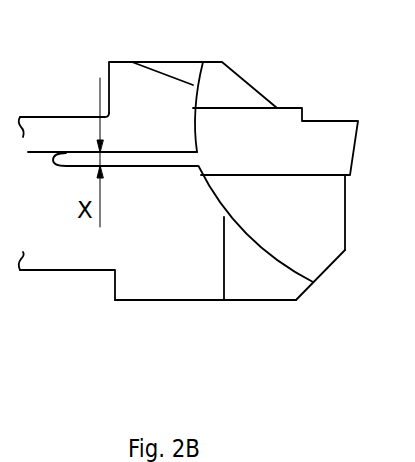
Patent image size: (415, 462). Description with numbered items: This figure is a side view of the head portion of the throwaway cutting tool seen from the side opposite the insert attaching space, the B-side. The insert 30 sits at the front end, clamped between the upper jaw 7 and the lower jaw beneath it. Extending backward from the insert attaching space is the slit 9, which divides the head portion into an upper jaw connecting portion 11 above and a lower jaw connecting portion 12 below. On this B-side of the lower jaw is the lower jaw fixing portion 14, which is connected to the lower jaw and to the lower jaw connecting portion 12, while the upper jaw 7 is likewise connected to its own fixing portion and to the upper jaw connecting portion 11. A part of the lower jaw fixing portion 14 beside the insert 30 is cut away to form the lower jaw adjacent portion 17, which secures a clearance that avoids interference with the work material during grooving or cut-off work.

The upper jaw 7 is at (242, 90).
The insert 30 is at (321, 153).
The upper jaw connecting portion 11 is at (88, 137).
The slit 9 is at (123, 158).
The lower jaw fixing portion 14 is at (262, 285).
The lower jaw adjacent portion 17 is at (283, 265).
The lower jaw connecting portion 12 is at (80, 250).